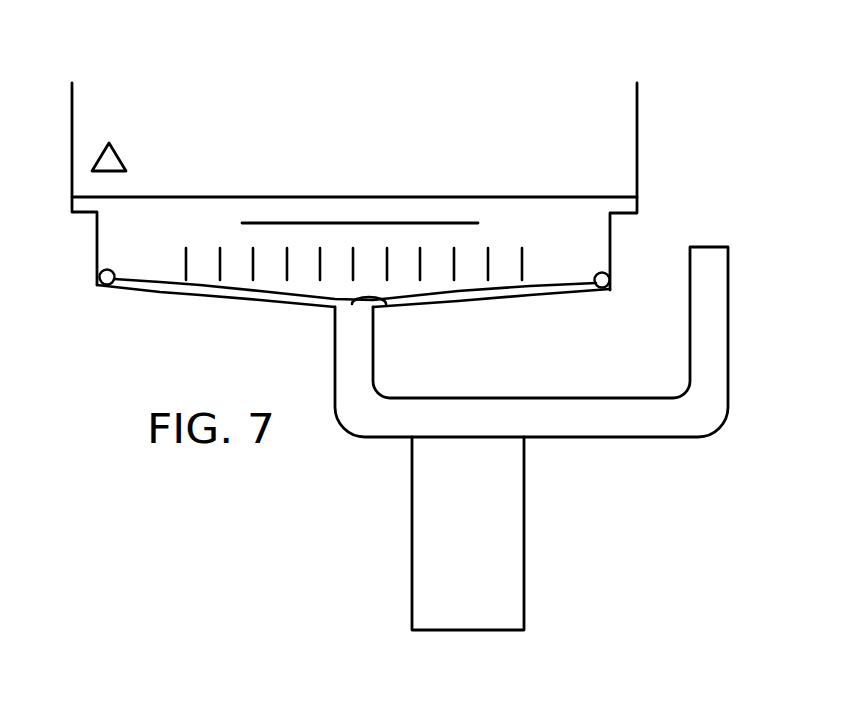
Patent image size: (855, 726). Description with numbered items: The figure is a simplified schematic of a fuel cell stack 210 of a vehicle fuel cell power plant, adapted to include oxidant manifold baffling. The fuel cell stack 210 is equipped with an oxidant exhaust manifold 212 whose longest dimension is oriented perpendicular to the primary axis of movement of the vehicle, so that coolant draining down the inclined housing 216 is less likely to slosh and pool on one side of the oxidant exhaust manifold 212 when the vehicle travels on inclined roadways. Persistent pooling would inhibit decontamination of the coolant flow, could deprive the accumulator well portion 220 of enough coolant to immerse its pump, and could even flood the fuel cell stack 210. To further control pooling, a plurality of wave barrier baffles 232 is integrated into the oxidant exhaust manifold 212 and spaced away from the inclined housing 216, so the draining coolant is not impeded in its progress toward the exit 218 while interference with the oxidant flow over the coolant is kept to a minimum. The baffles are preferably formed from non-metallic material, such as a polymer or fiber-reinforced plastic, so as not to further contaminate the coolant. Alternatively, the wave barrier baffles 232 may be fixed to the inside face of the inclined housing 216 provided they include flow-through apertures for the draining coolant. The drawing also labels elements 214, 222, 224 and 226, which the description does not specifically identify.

The fuel cell stack 210 is at (366, 104).
The oxidant exhaust manifold 212 is at (562, 225).
The plate 214 is at (357, 223).
The inclined housing 216 is at (293, 302).
The exit 218 is at (385, 306).
The accumulator well portion 220 is at (588, 427).
The support stem 222 is at (513, 505).
The indicator 224 is at (108, 162).
The pivot pin 226 is at (107, 269).
The wave barrier baffles 232 is at (280, 247).